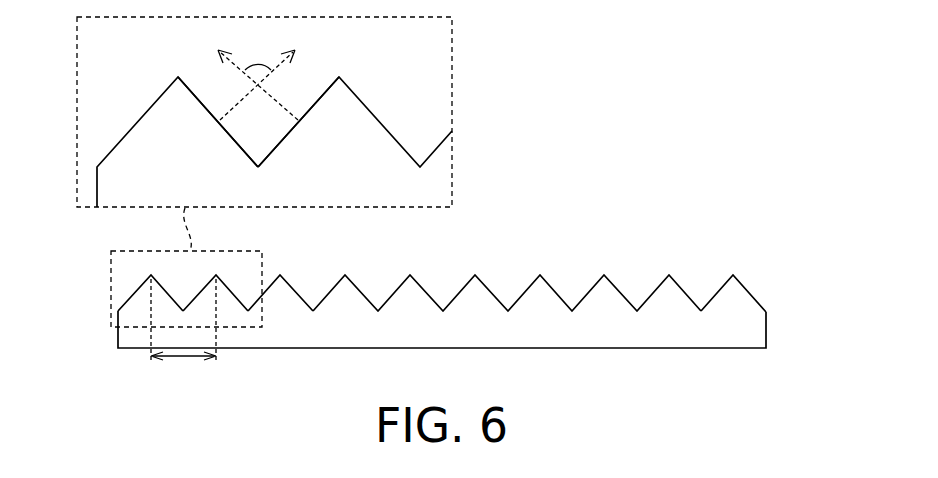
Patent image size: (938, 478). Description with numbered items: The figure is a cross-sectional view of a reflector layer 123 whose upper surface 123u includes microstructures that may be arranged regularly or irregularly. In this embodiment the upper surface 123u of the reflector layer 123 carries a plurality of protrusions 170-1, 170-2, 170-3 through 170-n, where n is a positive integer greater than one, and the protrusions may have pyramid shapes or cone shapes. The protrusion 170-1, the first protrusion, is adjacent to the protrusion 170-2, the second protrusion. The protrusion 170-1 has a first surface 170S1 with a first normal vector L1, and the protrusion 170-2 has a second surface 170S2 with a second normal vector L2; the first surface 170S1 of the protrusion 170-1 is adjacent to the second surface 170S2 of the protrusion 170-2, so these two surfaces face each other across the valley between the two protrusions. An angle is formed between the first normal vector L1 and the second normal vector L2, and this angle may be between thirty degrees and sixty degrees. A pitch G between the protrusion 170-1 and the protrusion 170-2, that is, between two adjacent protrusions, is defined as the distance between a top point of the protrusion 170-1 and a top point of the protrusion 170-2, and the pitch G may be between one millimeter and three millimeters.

The reflector layer 123 is at (748, 324).
The upper surface of the reflector layer 123u is at (752, 294).
The first protrusion 170-1 is at (145, 298).
The second protrusion 170-2 is at (220, 298).
The third protrusion 170-3 is at (283, 297).
The n-th protrusion 170-n is at (728, 298).
The first surface 170S1 is at (204, 104).
The second surface 170S2 is at (316, 104).
The first normal vector L1 is at (273, 74).
The second normal vector L2 is at (243, 74).
The pitch G is at (183, 333).